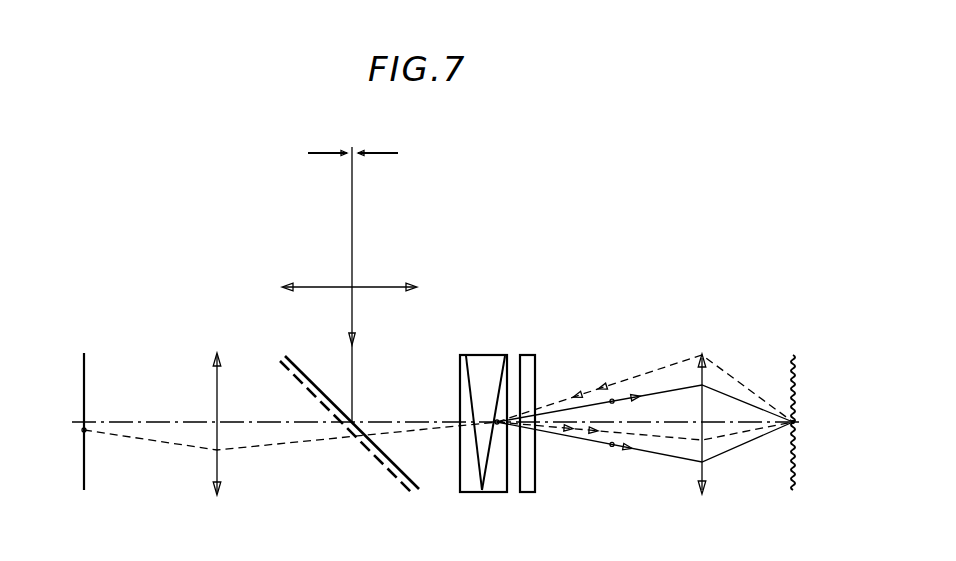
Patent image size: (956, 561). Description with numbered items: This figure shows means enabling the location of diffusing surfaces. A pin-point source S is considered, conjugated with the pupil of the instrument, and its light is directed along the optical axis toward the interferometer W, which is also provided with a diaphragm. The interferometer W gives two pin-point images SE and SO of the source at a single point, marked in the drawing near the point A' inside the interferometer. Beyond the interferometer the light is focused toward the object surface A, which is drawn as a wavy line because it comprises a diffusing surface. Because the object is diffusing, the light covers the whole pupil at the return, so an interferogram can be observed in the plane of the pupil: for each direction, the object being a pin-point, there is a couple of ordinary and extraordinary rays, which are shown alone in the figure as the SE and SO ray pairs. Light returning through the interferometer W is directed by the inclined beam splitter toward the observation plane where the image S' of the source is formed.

The pin-point source S is at (361, 280).
The image of source on screen S' is at (276, 421).
The interferometer W is at (483, 442).
The image of analyzer in Wollaston prism A' is at (484, 408).
The pin-point image (extraordinary) SE is at (645, 390).
The pin-point image (ordinary) SO is at (645, 453).
The analyzer A is at (786, 438).